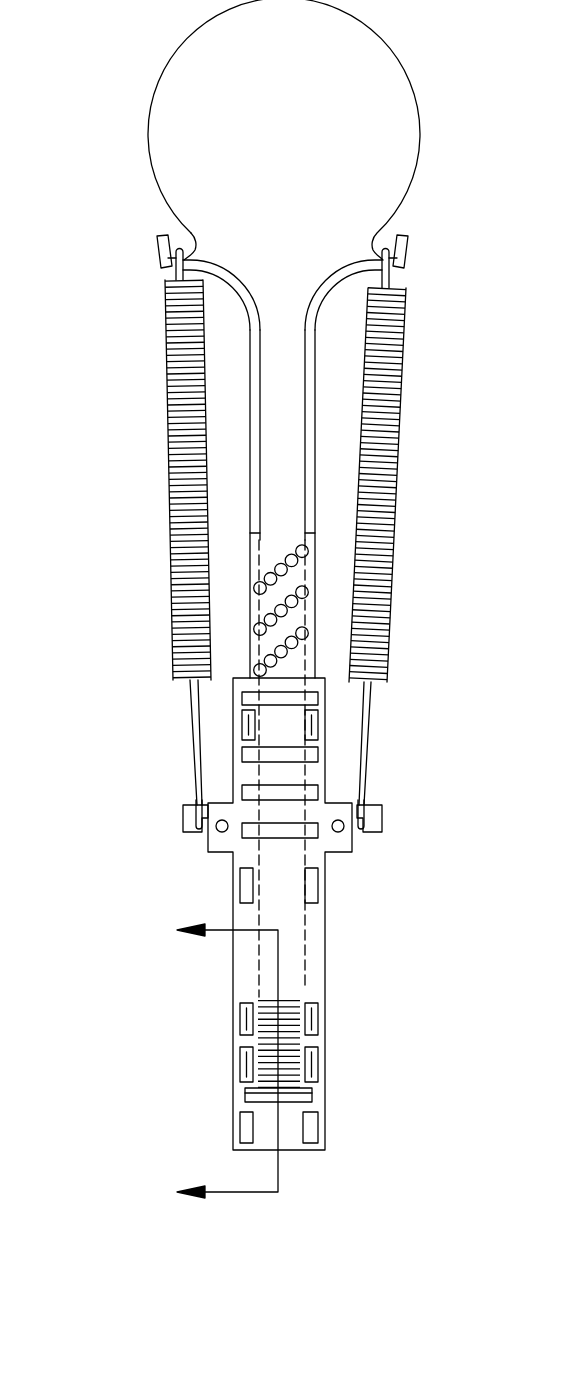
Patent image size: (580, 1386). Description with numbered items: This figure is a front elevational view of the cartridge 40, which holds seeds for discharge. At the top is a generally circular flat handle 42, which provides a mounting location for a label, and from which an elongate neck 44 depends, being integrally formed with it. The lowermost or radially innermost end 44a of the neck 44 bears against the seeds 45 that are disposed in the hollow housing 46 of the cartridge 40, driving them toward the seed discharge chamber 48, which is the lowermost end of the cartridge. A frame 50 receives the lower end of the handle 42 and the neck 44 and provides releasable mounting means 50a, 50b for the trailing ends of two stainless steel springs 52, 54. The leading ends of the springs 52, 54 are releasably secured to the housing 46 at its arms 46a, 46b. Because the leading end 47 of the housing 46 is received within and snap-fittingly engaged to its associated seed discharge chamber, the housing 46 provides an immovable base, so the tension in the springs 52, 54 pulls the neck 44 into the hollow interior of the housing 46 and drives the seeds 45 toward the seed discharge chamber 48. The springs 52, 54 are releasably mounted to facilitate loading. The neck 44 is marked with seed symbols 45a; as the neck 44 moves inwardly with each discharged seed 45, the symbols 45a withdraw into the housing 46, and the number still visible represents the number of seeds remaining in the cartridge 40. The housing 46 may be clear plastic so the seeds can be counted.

The cartridge 40 is at (450, 85).
The handle 42 is at (298, 163).
The neck 44 is at (280, 383).
The lowermost end of neck 44a is at (298, 972).
The seeds 45 is at (268, 993).
The seed symbols 45a is at (277, 567).
The housing 46 is at (345, 740).
The arm of housing 46a is at (183, 813).
The arm of housing 46b is at (377, 815).
The leading end of housing 47 is at (323, 1135).
The seed discharge chamber 48 is at (330, 1090).
The frame 50 is at (347, 268).
The releasable mounting means 50a is at (157, 243).
The releasable mounting means 50b is at (416, 248).
The spring 52 is at (167, 463).
The spring 54 is at (400, 395).